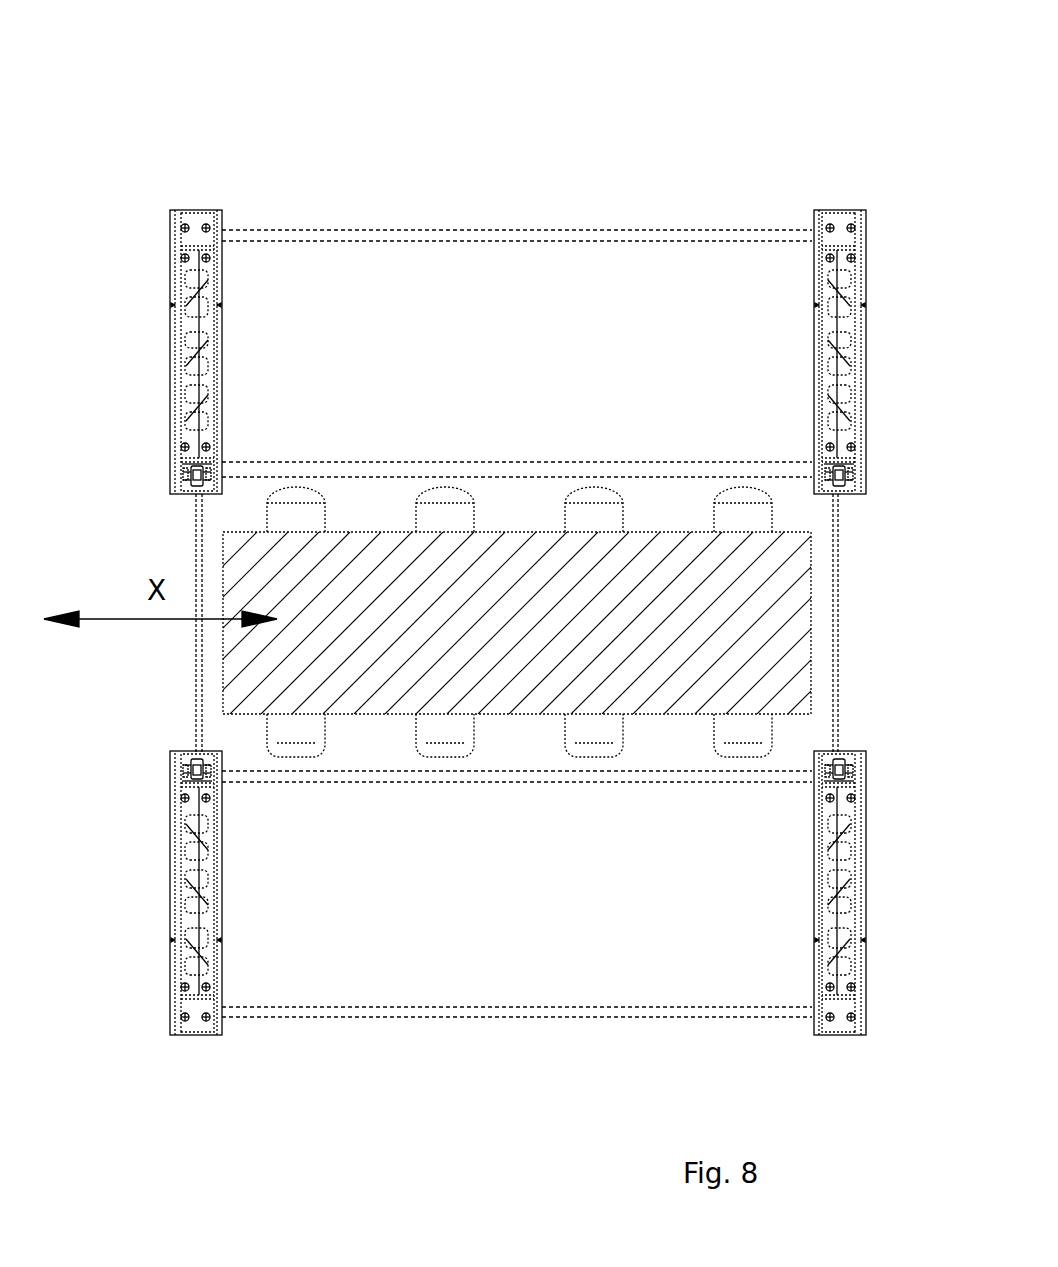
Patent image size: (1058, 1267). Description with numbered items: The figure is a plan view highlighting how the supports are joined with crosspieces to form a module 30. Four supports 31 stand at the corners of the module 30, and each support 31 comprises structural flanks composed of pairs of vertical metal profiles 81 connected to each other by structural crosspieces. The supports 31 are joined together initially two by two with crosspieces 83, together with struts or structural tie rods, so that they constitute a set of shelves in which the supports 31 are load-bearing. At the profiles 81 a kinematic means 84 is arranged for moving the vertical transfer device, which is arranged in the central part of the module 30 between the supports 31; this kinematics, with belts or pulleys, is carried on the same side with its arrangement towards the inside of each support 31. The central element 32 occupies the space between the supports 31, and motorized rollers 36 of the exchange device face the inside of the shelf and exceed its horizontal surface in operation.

The module 30 is at (408, 110).
The support 31 is at (147, 338).
The tray body 32 is at (697, 628).
The motorized roller 36 is at (748, 517).
The vertical metal profile 81 is at (195, 232).
The crosspiece 83 is at (198, 705).
The kinematic means 84 is at (192, 478).